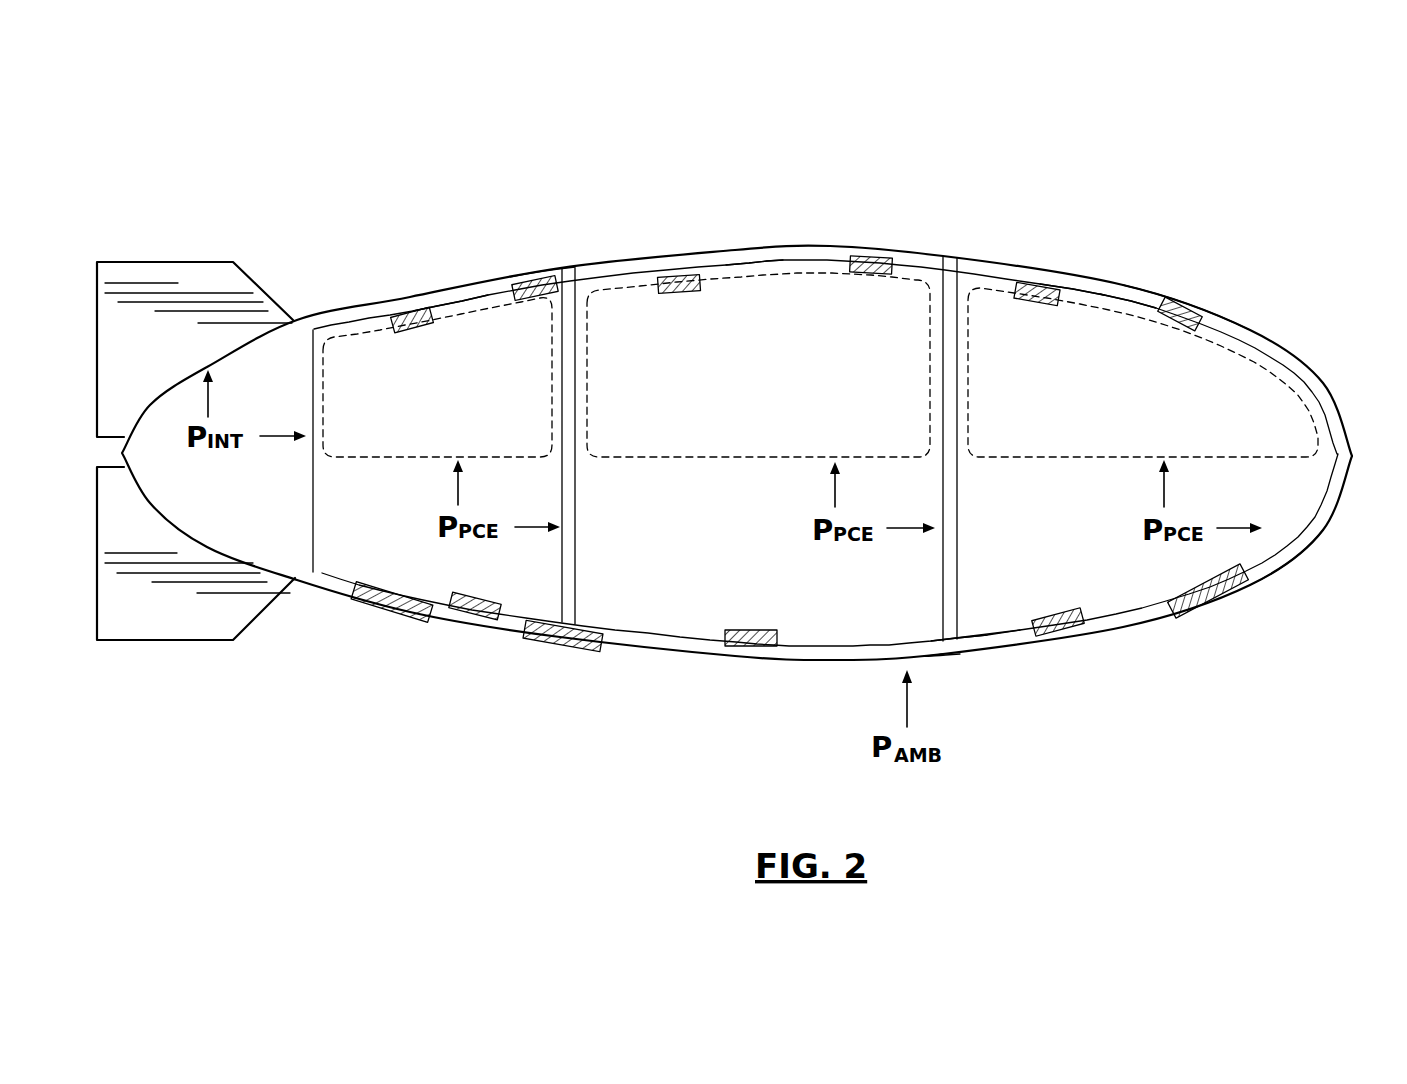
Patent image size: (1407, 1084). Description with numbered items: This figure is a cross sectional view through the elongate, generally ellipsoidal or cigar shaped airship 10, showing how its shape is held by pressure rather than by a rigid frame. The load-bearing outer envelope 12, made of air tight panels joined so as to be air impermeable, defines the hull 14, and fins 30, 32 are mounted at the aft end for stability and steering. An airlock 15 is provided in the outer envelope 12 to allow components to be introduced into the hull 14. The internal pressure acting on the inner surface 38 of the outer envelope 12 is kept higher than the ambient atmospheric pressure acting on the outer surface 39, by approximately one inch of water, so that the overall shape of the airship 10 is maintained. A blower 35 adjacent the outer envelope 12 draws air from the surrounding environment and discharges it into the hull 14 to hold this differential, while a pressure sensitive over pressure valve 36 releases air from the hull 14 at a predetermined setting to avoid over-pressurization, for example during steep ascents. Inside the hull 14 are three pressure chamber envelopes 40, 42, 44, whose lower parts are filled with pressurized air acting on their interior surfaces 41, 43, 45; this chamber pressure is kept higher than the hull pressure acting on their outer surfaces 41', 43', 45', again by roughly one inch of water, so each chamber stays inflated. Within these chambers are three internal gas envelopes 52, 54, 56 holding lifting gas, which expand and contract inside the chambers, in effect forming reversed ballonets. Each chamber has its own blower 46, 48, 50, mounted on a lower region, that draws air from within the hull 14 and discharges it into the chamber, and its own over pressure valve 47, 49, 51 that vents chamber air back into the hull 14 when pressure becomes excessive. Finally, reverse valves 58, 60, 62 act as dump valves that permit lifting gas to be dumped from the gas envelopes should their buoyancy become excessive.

The airship 10 is at (1298, 230).
The outer envelope 12 is at (1326, 380).
The hull 14 is at (1329, 540).
The airlock 15 is at (567, 646).
The fin 30 is at (244, 262).
The fin 32 is at (158, 641).
The blower 35 is at (1213, 598).
The pressure sensitive valve 36 is at (388, 604).
The inner surface 38 is at (1000, 632).
The outer surface 39 is at (978, 655).
The pressure chamber envelope 40 is at (557, 272).
The interior surface 41 is at (365, 451).
The first cell wall 41' is at (445, 244).
The pressure chamber envelope 42 is at (815, 262).
The interior surface 43 is at (629, 446).
The second cell wall 43' is at (747, 204).
The pressure chamber envelope 44 is at (1123, 296).
The interior surface 45 is at (1000, 449).
The third cell wall 45' is at (1077, 234).
The blower 46 is at (470, 614).
The pressure sensitive valve 47 is at (537, 280).
The blower 48 is at (753, 648).
The pressure sensitive valve 49 is at (873, 257).
The blower 50 is at (1065, 626).
The pressure sensitive valve 51 is at (1180, 305).
The internal gas envelope 52 is at (490, 287).
The internal gas envelope 54 is at (915, 277).
The internal gas envelope 56 is at (1263, 345).
The reverse valve 58 is at (405, 312).
The reverse valve 60 is at (683, 277).
The reverse valve 62 is at (1038, 287).